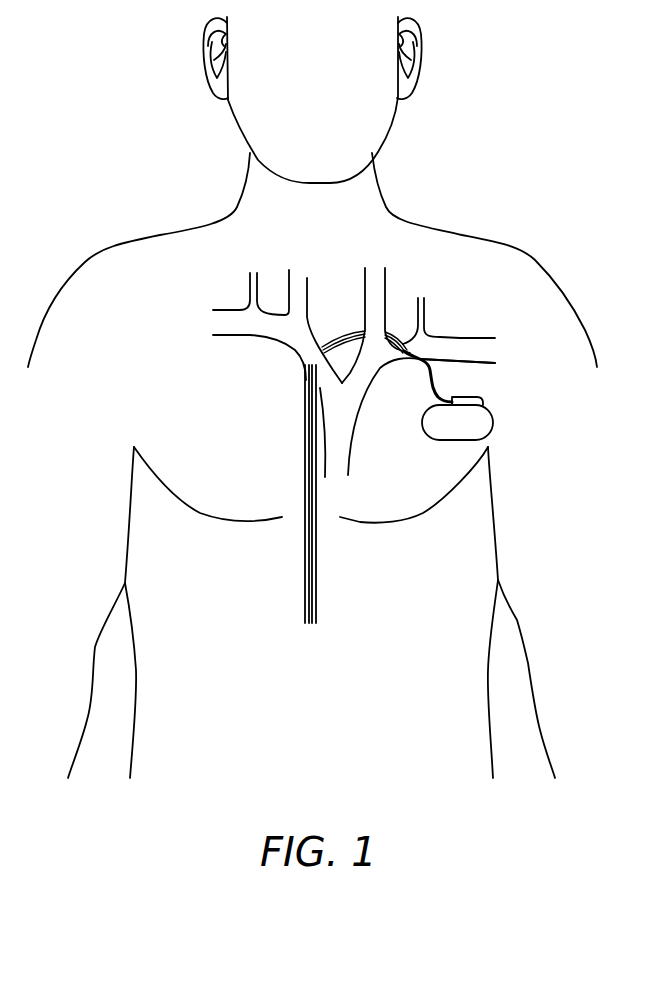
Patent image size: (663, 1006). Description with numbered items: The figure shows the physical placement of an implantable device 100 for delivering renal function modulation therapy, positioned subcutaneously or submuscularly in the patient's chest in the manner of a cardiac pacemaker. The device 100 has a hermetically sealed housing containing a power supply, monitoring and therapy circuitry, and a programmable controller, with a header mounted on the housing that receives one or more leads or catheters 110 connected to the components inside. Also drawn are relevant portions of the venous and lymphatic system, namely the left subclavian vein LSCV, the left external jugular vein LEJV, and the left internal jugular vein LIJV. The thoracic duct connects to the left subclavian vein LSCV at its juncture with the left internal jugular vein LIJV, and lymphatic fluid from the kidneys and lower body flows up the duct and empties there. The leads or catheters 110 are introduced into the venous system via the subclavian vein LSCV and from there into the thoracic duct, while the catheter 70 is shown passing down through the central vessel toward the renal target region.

The catheter 70 is at (305, 555).
The implantable device 100 is at (480, 397).
The leads or catheters 110 is at (428, 374).
The left internal jugular vein LIJV is at (365, 280).
The left external jugular vein LEJV is at (425, 308).
The left subclavian vein LSCV is at (465, 333).